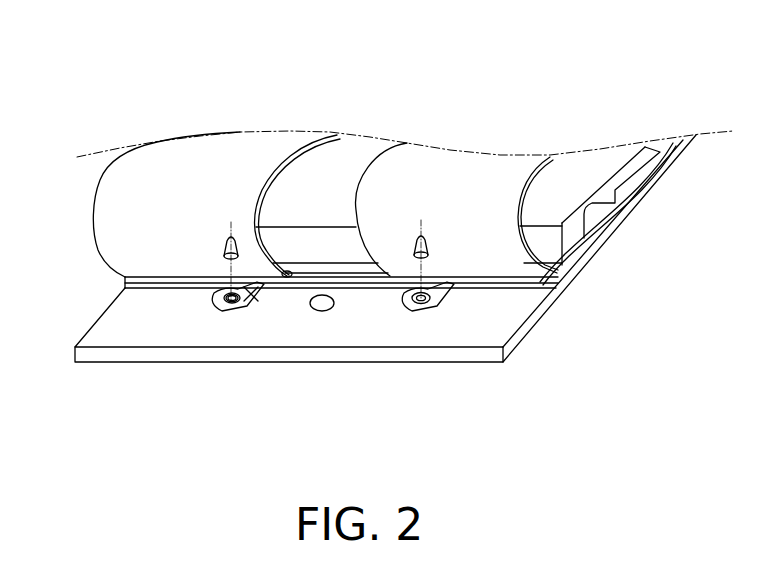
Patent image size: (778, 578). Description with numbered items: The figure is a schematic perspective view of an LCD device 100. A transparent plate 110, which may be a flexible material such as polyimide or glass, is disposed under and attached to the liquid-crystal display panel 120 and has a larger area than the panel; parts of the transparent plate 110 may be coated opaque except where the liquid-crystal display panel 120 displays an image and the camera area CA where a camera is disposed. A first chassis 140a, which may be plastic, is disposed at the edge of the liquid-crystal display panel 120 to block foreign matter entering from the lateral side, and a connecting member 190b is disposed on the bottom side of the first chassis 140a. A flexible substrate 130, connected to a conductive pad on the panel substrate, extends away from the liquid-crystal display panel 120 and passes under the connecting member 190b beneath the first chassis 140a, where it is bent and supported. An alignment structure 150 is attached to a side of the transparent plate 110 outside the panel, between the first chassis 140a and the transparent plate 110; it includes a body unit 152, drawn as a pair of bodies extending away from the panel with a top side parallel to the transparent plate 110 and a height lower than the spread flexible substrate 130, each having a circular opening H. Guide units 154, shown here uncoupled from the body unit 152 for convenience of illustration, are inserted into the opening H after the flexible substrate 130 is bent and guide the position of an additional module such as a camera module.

The LCD device 100 is at (708, 50).
The transparent plate 110 is at (488, 331).
The liquid-crystal display panel 120 is at (630, 178).
The flexible substrate 130 is at (556, 293).
The first chassis 140a is at (632, 155).
The alignment structure 150 is at (298, 285).
The body unit 152 is at (260, 303).
The guide unit 154 is at (222, 242).
The connecting member 190b is at (590, 247).
The opening H is at (217, 302).
The camera area CA is at (316, 311).